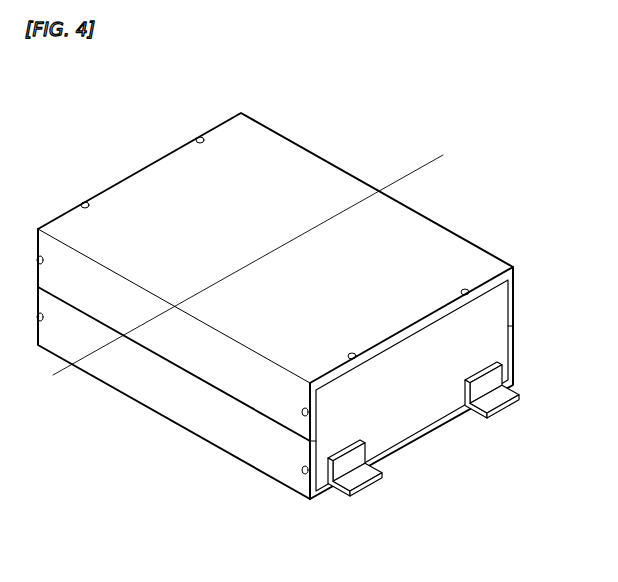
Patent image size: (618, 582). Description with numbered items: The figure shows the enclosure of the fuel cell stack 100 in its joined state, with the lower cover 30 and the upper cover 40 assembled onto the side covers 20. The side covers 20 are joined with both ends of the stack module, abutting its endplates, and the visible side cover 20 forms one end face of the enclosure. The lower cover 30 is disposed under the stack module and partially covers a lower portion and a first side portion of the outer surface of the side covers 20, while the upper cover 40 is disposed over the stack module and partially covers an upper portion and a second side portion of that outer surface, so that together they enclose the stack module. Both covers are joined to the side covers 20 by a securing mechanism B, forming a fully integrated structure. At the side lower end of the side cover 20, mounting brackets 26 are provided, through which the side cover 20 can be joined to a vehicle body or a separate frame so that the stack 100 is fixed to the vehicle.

The fuel cell stack 100 is at (309, 319).
The side cover 20 is at (407, 402).
The mounting bracket 26 is at (362, 477).
The lower cover 30 is at (157, 390).
The upper cover 40 is at (270, 393).
The securing mechanism B is at (467, 290).